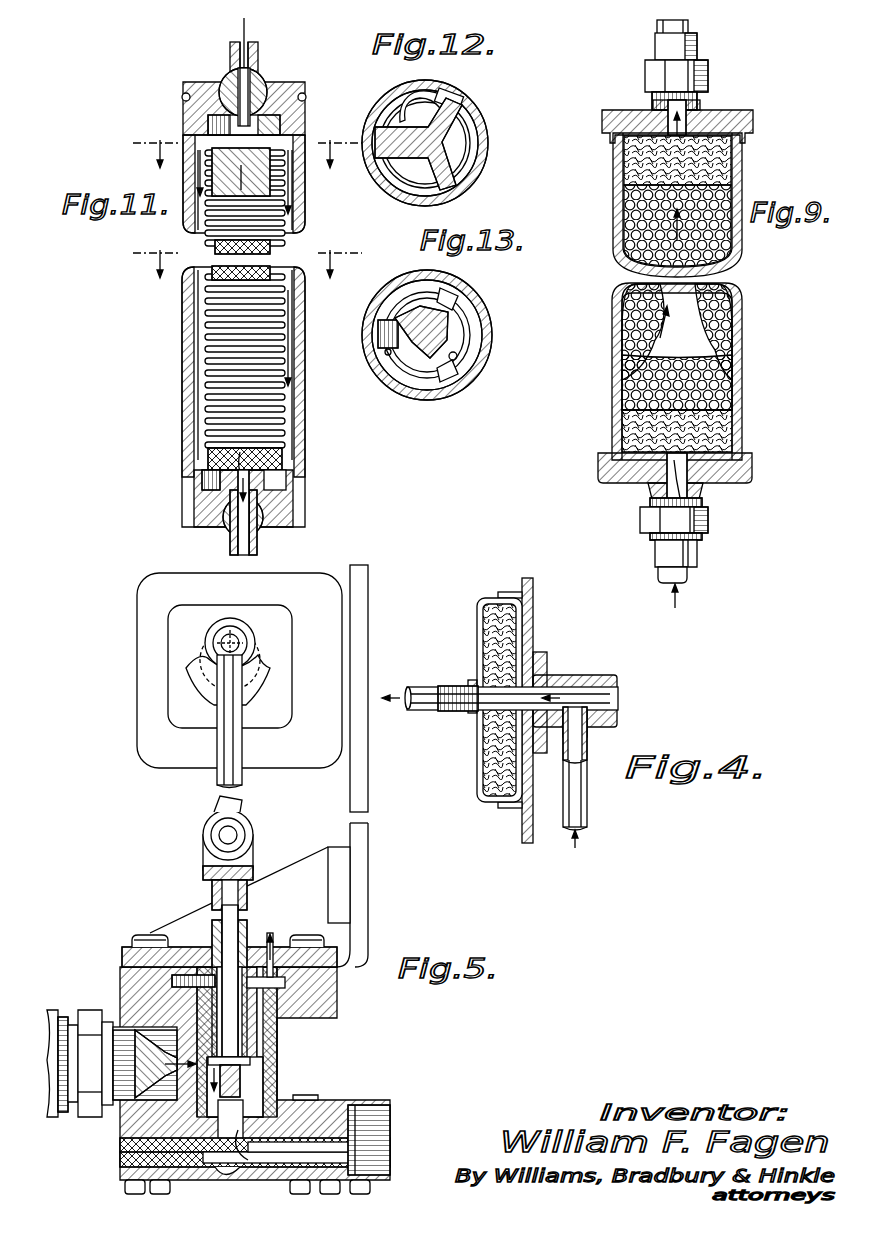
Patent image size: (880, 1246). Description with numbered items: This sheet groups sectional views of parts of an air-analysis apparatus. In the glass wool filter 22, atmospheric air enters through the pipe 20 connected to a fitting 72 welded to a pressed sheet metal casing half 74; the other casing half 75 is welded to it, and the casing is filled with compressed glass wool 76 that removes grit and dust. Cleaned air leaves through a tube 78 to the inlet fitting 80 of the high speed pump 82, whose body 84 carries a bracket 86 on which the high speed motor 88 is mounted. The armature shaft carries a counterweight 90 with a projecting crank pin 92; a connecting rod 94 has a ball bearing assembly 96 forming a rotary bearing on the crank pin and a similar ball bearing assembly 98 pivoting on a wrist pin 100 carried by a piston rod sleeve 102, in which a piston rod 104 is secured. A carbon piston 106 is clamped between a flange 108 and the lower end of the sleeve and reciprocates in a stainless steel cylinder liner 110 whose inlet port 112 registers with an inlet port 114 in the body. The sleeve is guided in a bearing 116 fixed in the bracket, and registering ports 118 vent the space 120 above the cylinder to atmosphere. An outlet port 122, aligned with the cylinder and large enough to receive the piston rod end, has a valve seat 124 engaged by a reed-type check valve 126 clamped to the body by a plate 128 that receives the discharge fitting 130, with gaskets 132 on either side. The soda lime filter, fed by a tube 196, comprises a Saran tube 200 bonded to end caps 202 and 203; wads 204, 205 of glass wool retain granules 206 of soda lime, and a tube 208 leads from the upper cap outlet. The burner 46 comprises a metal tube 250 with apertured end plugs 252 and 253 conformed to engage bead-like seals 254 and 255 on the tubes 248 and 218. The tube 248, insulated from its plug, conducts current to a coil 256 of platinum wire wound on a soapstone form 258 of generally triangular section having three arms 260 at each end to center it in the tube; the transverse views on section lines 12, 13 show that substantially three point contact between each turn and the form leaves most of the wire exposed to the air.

In FIG. 11, the section line 12 is at (247, 146).
In FIG. 11, the section line 13 is at (247, 256).
In FIG. 4, the pipe 20 is at (580, 807).
In FIG. 4, the glass wool filter 22 is at (468, 624).
In FIG. 11, the burner 46 is at (176, 424).
In FIG. 4, the fitting 72 is at (606, 690).
In FIG. 4, the pressed sheet metal casing half 74 is at (495, 800).
In FIG. 4, the casing half 75 is at (478, 768).
In FIG. 4, the compressed glass wool 76 is at (480, 733).
In FIG. 4, the tube 78 is at (425, 690).
In FIG. 5, the inlet fitting 80 is at (90, 1020).
In FIG. 5, the high speed pump 82 is at (358, 1073).
In FIG. 5, the body 84 is at (332, 1112).
In FIG. 5, the bracket 86 is at (356, 866).
In FIG. 5, the high speed motor 88 is at (284, 574).
In FIG. 5, the counterweight 90 is at (272, 700).
In FIG. 5, the crank pin 92 is at (232, 637).
In FIG. 5, the connecting rod 94 is at (232, 750).
In FIG. 5, the ball bearing assembly 96 is at (258, 640).
In FIG. 5, the ball bearing assembly 98 is at (248, 822).
In FIG. 5, the wrist pin 100 is at (238, 835).
In FIG. 5, the piston rod sleeve 102 is at (255, 862).
In FIG. 5, the piston rod 104 is at (222, 876).
In FIG. 5, the piston 106 is at (328, 998).
In FIG. 5, the flange 108 is at (265, 1088).
In FIG. 5, the cylinder liner 110 is at (265, 1097).
In FIG. 5, the inlet port 112 is at (203, 981).
In FIG. 5, the inlet port 114 is at (204, 1120).
In FIG. 5, the bearing 116 is at (214, 948).
In FIG. 5, the registering ports 118 is at (268, 930).
In FIG. 5, the space 120 is at (340, 980).
In FIG. 5, the outlet port 122 is at (120, 1163).
In FIG. 5, the valve seat 124 is at (120, 1142).
In FIG. 5, the reed-type check valve 126 is at (308, 1148).
In FIG. 5, the plate 128 is at (388, 1168).
In FIG. 5, the discharge fitting 130 is at (224, 1181).
In FIG. 5, the gaskets 132 is at (370, 1150).
In FIG. 9, the tube 196 is at (688, 582).
In FIG. 9, the tube 200 is at (743, 330).
In FIG. 9, the end cap 202 is at (754, 473).
In FIG. 9, the end cap 203 is at (755, 129).
In FIG. 9, the wad 204 is at (622, 435).
In FIG. 9, the wad 205 is at (612, 178).
In FIG. 9, the granules 206 is at (614, 358).
In FIG. 9, the tube 208 is at (690, 30).
In FIG. 11, the tube 218 is at (229, 548).
In FIG. 11, the tube 248 is at (230, 56).
In FIG. 11, the metal tube 250 is at (300, 402).
In FIG. 13, the metal tube 250 is at (485, 352).
In FIG. 11, the end plug 252 is at (300, 92).
In FIG. 11, the end plug 253 is at (306, 492).
In FIG. 11, the bead-like seal 254 is at (264, 86).
In FIG. 11, the bead-like seal 255 is at (258, 532).
In FIG. 11, the coil of platinum wire 256 is at (275, 246).
In FIG. 12, the coil of platinum wire 256 is at (457, 118).
In FIG. 13, the coil of platinum wire 256 is at (462, 332).
In FIG. 11, the form 258 is at (284, 466).
In FIG. 12, the form 258 is at (440, 138).
In FIG. 13, the form 258 is at (445, 318).
In FIG. 12, the arms 260 is at (455, 193).
In FIG. 13, the arms 260 is at (450, 386).